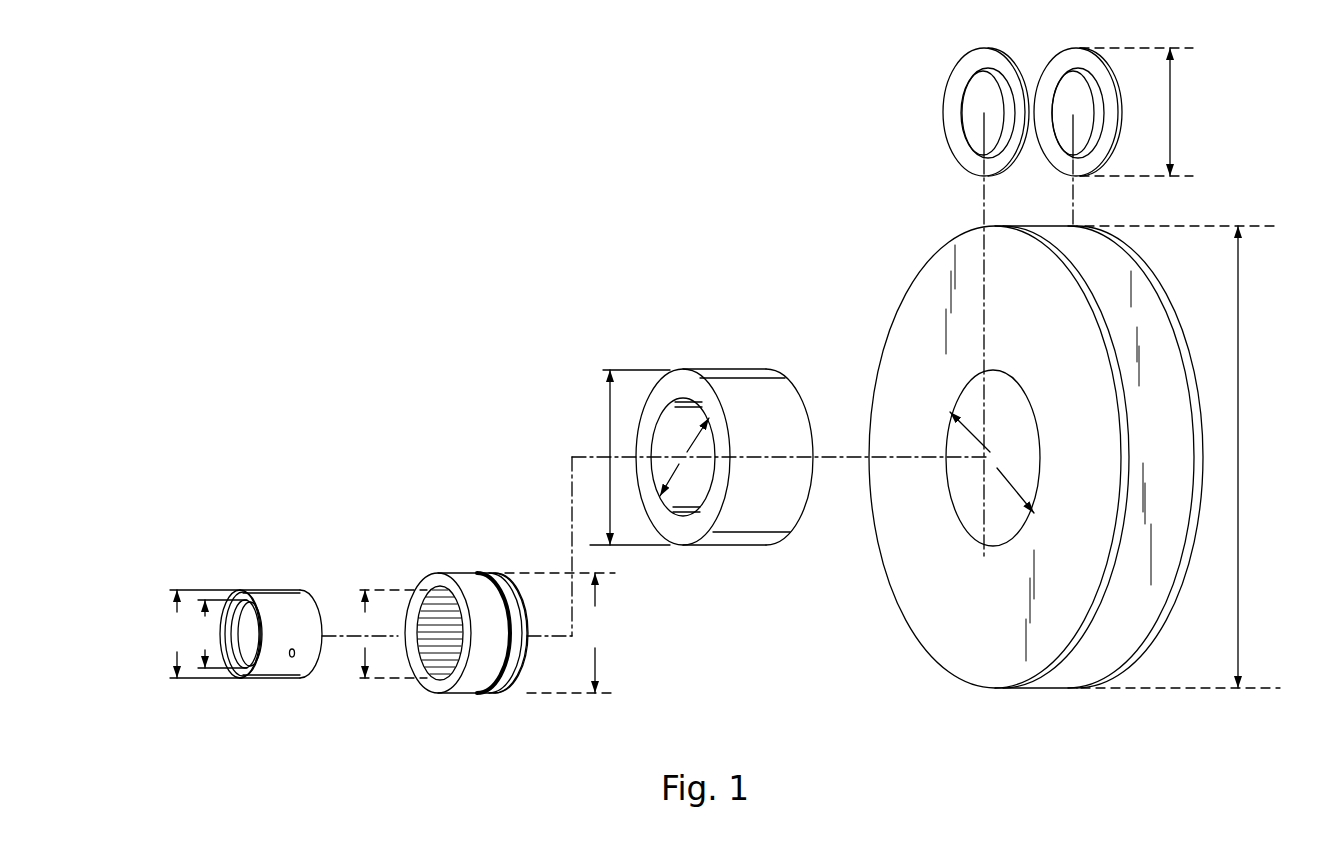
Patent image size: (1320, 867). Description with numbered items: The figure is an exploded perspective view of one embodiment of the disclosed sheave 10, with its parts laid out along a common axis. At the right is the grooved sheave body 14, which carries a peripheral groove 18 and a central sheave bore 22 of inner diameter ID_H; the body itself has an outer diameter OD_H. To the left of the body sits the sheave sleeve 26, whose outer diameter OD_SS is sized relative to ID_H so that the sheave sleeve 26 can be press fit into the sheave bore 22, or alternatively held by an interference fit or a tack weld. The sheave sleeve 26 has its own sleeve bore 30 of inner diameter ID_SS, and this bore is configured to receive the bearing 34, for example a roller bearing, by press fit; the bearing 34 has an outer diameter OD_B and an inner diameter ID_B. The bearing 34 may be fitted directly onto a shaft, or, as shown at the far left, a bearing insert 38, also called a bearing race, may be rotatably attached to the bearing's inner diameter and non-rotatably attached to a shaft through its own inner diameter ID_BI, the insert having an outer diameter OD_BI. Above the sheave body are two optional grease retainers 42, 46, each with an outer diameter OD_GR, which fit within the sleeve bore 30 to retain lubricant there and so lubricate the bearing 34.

The sheave 10 is at (668, 235).
The sheave body 14 is at (997, 666).
The groove 18 is at (1095, 660).
The sheave bore 22 is at (985, 519).
The sheave sleeve 26 is at (732, 387).
The sleeve bore 30 is at (675, 415).
The bearing 34 is at (440, 582).
The bearing insert 38 is at (268, 600).
The grease retainer 42 is at (961, 73).
The grease retainer 46 is at (1072, 56).